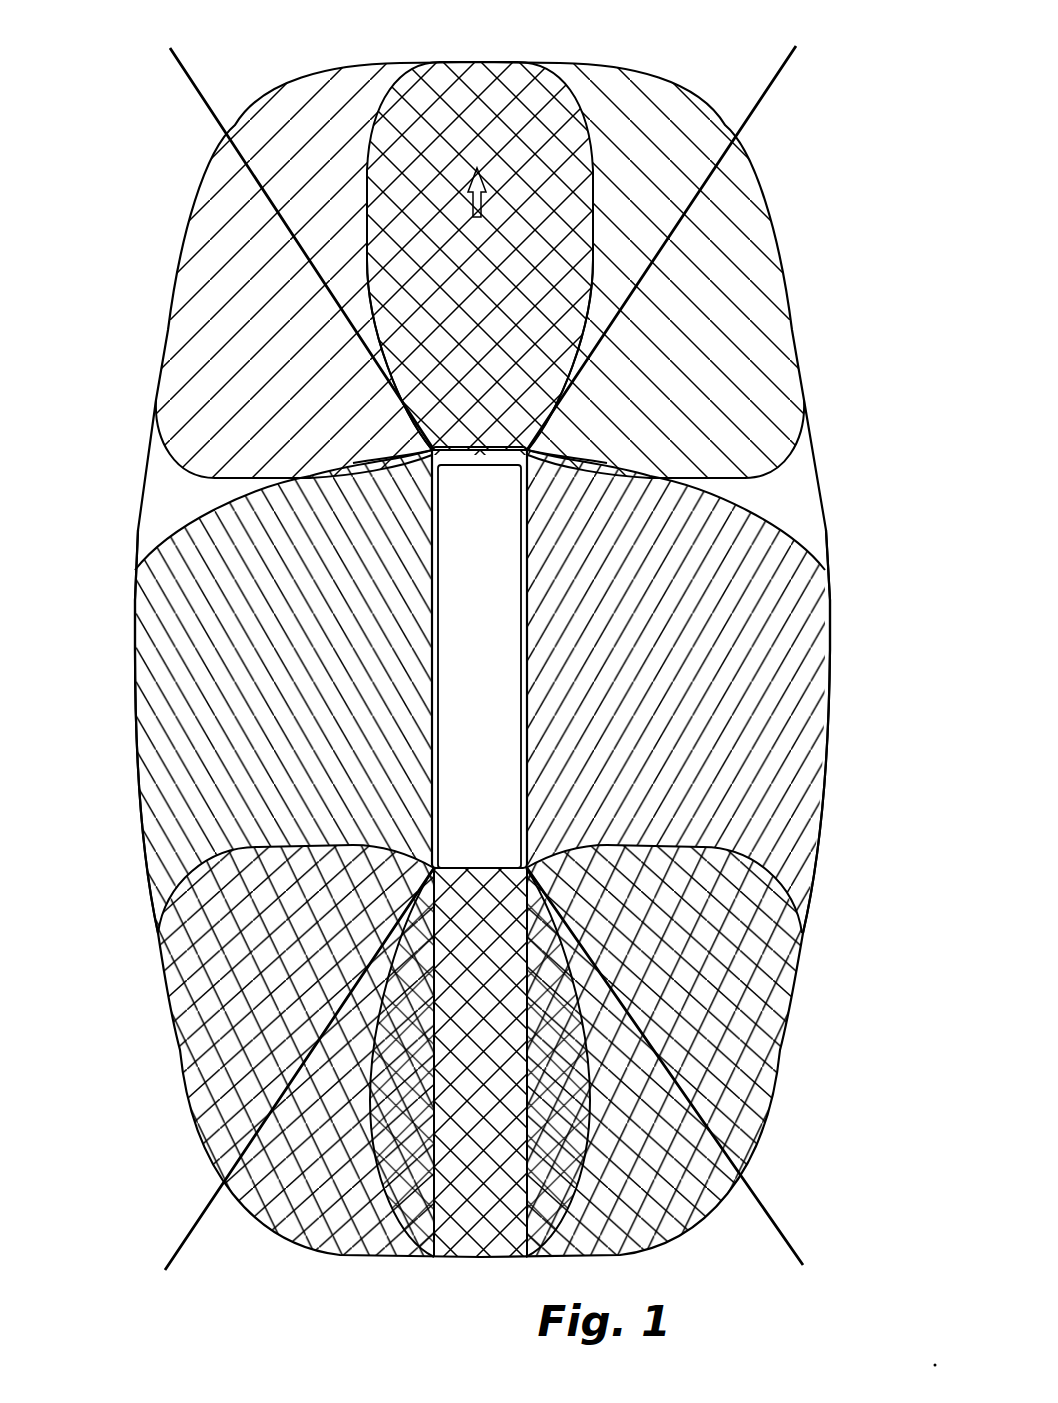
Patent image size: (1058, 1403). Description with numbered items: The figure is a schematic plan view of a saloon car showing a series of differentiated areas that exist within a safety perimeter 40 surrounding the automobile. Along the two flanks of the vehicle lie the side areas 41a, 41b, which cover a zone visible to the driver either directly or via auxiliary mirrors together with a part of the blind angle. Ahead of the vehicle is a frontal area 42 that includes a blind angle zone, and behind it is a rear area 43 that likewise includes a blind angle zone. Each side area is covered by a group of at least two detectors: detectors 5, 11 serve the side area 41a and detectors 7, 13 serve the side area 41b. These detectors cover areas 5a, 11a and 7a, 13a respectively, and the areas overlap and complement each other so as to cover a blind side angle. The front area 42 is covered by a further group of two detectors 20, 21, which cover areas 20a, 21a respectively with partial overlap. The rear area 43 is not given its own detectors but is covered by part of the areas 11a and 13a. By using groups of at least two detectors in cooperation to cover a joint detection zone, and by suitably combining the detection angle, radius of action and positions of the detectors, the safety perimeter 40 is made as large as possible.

The safety perimeter 40 is at (145, 237).
The frontal area 42 is at (478, 60).
The rear area 43 is at (484, 1260).
The detection area 20a is at (529, 701).
The detection area 21a is at (480, 701).
The detector 20 is at (426, 447).
The detector 21 is at (534, 447).
The detector 5 is at (427, 456).
The detector 7 is at (533, 456).
The detection area 5a is at (529, 701).
The detection area 7a is at (480, 701).
The detector 11 is at (395, 887).
The detector 13 is at (566, 887).
The detection area 11a is at (529, 701).
The detection area 13a is at (480, 701).
The side area 41a is at (130, 658).
The side area 41b is at (832, 658).